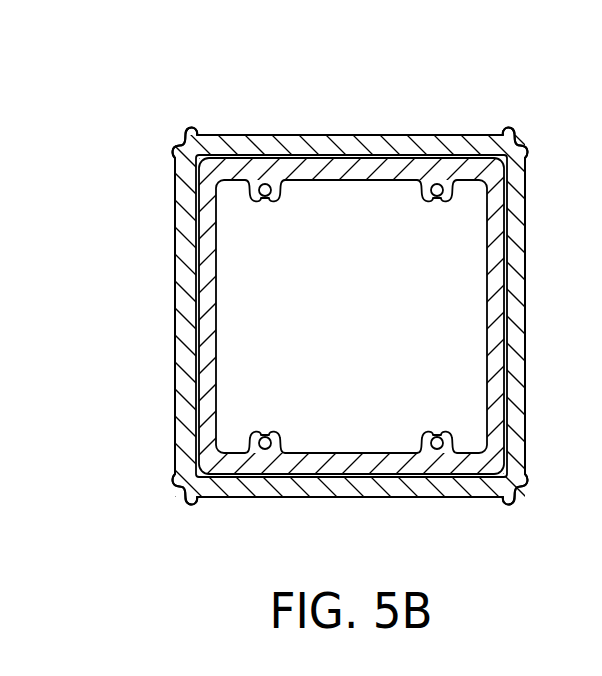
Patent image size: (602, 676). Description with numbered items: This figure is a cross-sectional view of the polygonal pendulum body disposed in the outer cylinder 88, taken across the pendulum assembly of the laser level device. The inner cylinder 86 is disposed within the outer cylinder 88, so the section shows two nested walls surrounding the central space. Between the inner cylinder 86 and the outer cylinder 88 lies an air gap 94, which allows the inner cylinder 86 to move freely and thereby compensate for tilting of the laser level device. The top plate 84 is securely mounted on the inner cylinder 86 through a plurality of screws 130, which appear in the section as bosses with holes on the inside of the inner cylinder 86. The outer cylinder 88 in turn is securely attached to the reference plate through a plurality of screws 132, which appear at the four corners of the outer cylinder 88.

The top plate 84 is at (247, 285).
The inner cylinder 86 is at (486, 240).
The outer cylinder 88 is at (527, 215).
The air gap 94 is at (492, 157).
The screws 130 is at (265, 190).
The screws 132 is at (192, 135).